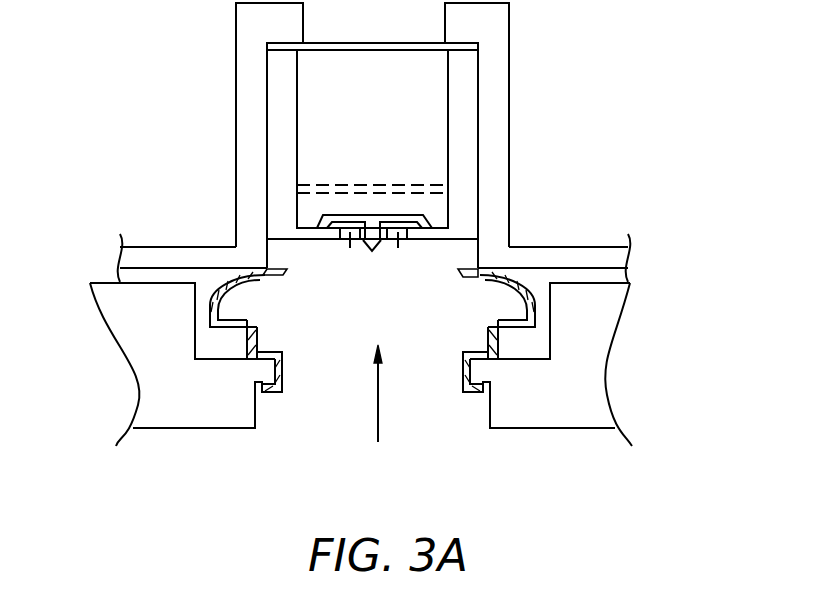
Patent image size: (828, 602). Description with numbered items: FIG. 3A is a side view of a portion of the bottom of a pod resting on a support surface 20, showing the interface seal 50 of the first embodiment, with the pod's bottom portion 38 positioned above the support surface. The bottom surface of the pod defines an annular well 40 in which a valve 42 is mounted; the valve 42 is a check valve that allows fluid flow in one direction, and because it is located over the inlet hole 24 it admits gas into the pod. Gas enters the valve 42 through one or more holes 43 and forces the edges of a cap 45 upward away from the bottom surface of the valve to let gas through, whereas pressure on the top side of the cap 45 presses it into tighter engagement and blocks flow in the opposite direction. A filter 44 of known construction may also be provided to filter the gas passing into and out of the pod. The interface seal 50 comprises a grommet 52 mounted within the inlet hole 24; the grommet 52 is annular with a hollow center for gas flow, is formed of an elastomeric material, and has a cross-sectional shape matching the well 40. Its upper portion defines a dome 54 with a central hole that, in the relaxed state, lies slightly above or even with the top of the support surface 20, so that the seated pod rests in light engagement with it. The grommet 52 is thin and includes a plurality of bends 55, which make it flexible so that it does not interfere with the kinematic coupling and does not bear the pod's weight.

The support surface 20 is at (153, 405).
The inlet hole 24 is at (352, 415).
The mounting plate 38 is at (190, 258).
The annular well 40 is at (437, 130).
The valve 42 is at (412, 213).
The holes 43 is at (350, 240).
The filter 44 is at (362, 43).
The cap 45 is at (320, 220).
The interface seal 50 is at (493, 306).
The grommet 52 is at (492, 353).
The dome 54 is at (262, 277).
The bends 55 is at (253, 363).